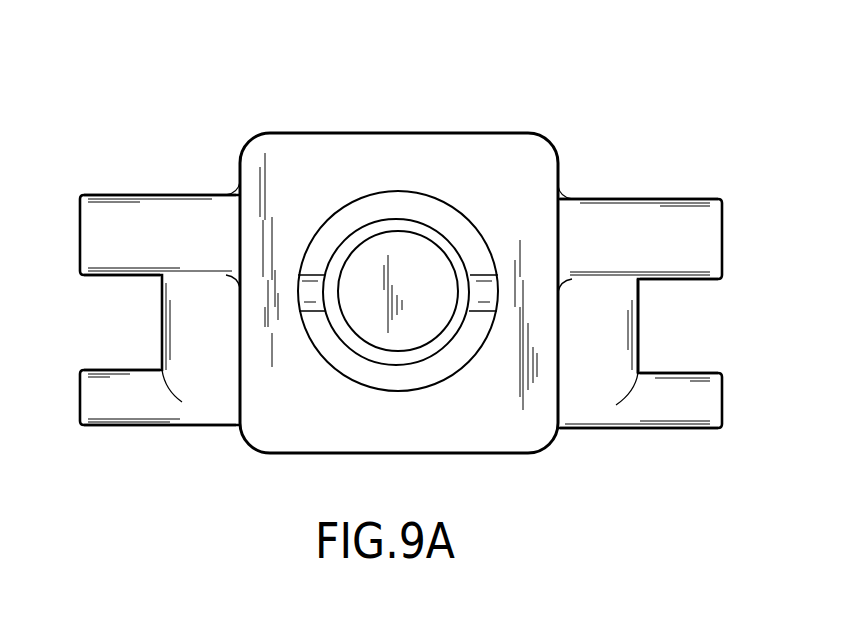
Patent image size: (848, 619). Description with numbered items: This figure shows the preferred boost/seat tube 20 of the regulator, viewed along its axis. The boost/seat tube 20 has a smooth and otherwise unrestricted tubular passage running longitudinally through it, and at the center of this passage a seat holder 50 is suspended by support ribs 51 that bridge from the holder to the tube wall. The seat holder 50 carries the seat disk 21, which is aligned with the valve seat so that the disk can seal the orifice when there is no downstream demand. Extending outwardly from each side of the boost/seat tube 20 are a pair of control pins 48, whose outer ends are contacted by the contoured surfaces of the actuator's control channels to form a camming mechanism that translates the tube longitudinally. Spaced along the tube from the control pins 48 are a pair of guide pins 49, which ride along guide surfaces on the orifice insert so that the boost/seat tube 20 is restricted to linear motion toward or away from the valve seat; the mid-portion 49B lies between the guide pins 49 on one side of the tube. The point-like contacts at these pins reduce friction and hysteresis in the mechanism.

The boost/seat tube 20 is at (333, 112).
The seat disk 21 is at (412, 266).
The control pins 48 is at (145, 223).
The guide pins 49 is at (167, 428).
The mid-portion 49B is at (640, 330).
The seat holder 50 is at (453, 325).
The support ribs 51 is at (313, 297).